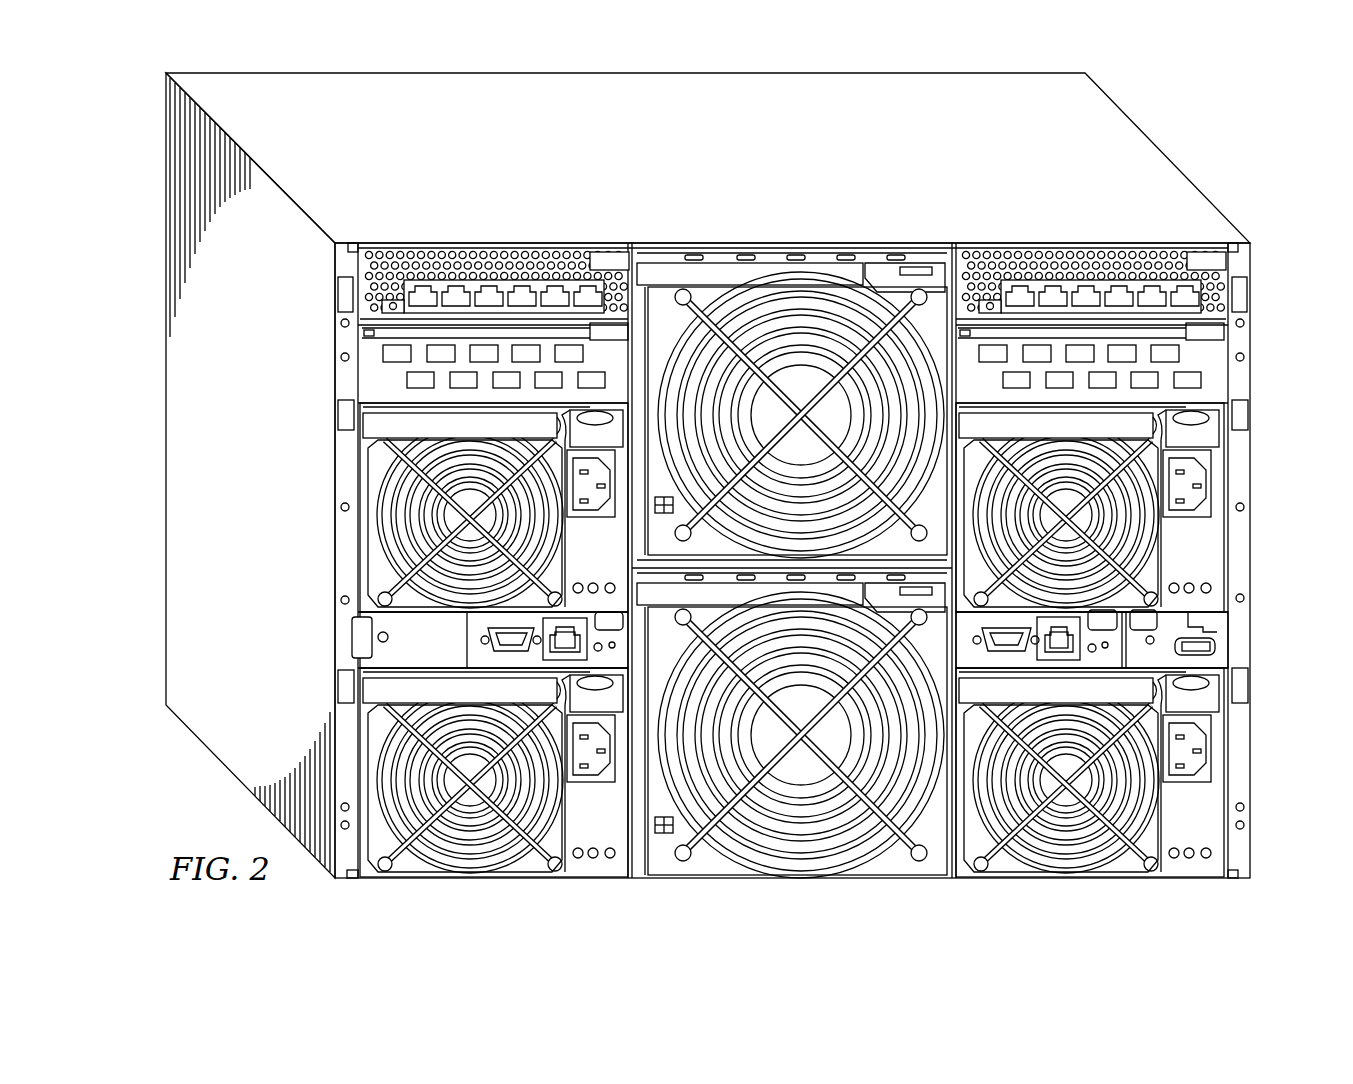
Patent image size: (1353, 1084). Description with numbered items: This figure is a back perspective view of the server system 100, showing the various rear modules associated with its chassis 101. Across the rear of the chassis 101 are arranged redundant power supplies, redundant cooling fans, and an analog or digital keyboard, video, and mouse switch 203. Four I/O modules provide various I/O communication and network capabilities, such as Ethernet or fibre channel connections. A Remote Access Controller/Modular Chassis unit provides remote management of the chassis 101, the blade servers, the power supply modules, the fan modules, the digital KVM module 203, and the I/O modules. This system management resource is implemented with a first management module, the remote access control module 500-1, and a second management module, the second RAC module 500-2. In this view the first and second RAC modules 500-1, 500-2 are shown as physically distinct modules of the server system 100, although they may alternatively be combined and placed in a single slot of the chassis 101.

The server system 100 is at (1226, 122).
The chassis 101 is at (166, 385).
The keyboard, video, and mouse (KVM) switch 203 is at (1216, 647).
The remote access control (RAC) module 500-1 is at (477, 657).
The second RAC module 500-2 is at (1189, 622).